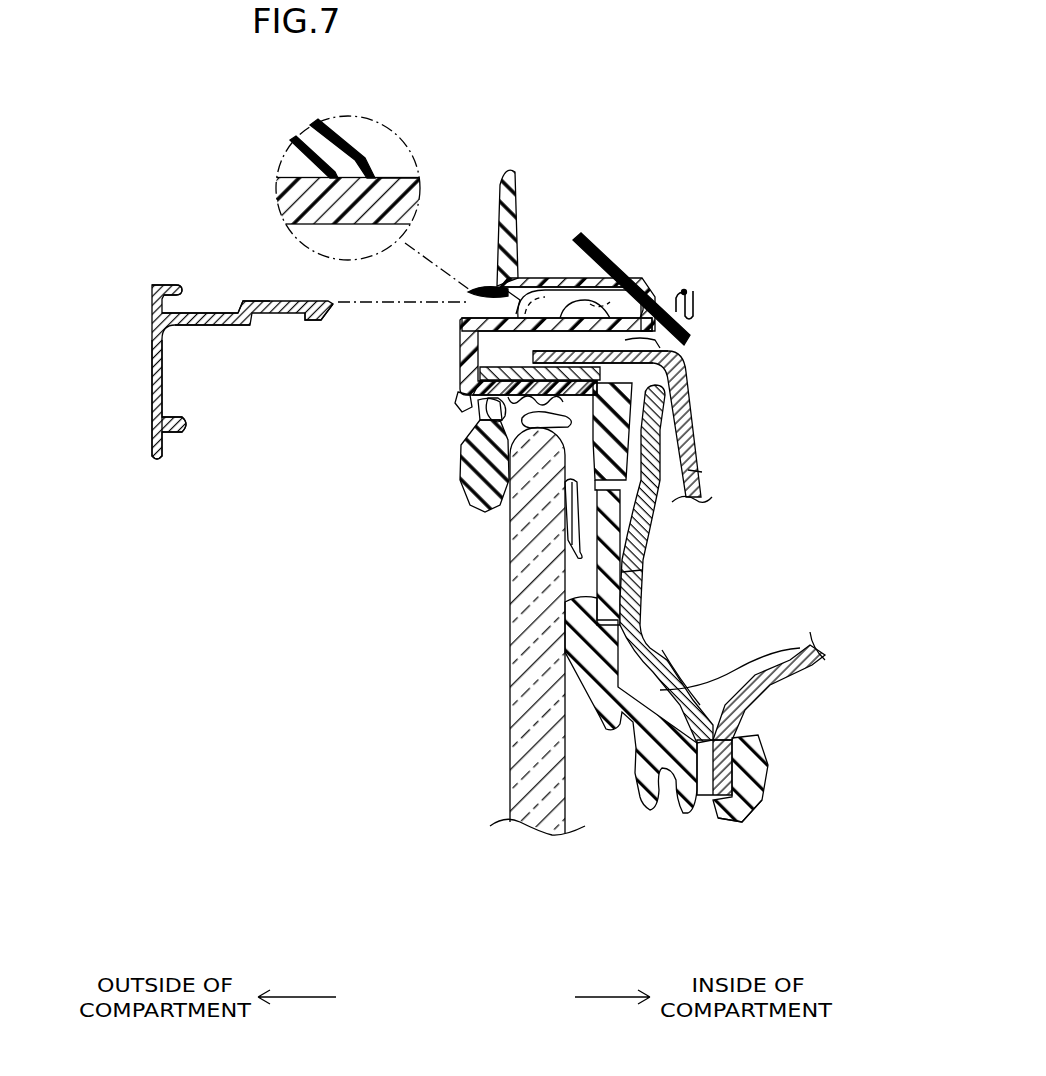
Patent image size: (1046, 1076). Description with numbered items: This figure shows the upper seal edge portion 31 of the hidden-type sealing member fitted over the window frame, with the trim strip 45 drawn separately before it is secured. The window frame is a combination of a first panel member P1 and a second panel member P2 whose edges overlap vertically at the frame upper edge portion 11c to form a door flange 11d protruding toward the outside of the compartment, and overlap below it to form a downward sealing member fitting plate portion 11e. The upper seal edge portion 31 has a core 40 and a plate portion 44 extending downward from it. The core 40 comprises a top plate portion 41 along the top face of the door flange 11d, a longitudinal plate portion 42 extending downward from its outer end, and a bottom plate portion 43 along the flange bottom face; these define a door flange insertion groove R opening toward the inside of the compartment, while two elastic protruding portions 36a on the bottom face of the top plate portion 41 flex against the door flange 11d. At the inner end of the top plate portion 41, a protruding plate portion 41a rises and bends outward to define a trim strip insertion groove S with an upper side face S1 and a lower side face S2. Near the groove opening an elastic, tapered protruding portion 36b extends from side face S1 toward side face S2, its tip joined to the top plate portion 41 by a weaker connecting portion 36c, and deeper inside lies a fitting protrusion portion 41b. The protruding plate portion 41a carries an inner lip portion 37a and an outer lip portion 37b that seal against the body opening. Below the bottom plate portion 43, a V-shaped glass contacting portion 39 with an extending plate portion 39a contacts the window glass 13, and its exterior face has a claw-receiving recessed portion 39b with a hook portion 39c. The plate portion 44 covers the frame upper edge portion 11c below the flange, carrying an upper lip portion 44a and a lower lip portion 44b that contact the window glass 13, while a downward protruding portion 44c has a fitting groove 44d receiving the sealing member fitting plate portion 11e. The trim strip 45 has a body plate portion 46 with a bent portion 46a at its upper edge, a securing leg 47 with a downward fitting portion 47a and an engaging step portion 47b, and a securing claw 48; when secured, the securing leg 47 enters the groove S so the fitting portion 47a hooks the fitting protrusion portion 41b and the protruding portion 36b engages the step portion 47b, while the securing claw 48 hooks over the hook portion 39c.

The frame upper edge portion 11c is at (697, 412).
The door flange 11d is at (472, 378).
The sealing member fitting plate portion 11e is at (702, 796).
The window glass 13 is at (510, 780).
The upper seal edge portion 31 is at (614, 180).
The protruding portions 36a is at (625, 356).
The protruding portion 36b is at (350, 138).
The connecting portion 36c is at (522, 300).
The inner lip portion 37a is at (583, 237).
The outer lip portion 37b is at (505, 178).
The glass contacting portion 39 is at (493, 512).
The extending plate portion 39a is at (565, 420).
The claw-receiving recessed portion 39b is at (482, 410).
The hook portion 39c is at (458, 404).
The core 40 is at (450, 328).
The top plate portion 41 is at (630, 283).
The protruding plate portion 41a is at (550, 290).
The fitting protrusion portion 41b is at (640, 272).
The longitudinal plate portion 42 is at (462, 356).
The bottom plate portion 43 is at (492, 408).
The plate portion 44 is at (510, 665).
The upper lip portion 44a is at (597, 486).
The lower lip portion 44b is at (590, 596).
The protruding portion 44c is at (740, 818).
The fitting groove 44d is at (738, 785).
The trim strip 45 is at (140, 343).
The body plate portion 46 is at (151, 400).
The bent portion 46a is at (165, 285).
The securing leg 47 is at (205, 326).
The fitting portion 47a is at (318, 324).
The engaging step portion 47b is at (240, 308).
The securing claw 48 is at (172, 434).
The trim strip insertion groove S is at (470, 296).
The side face S1 is at (540, 294).
The side face S2 is at (600, 298).
The door flange insertion groove R is at (652, 340).
The first panel member P1 is at (702, 472).
The second panel member P2 is at (640, 570).